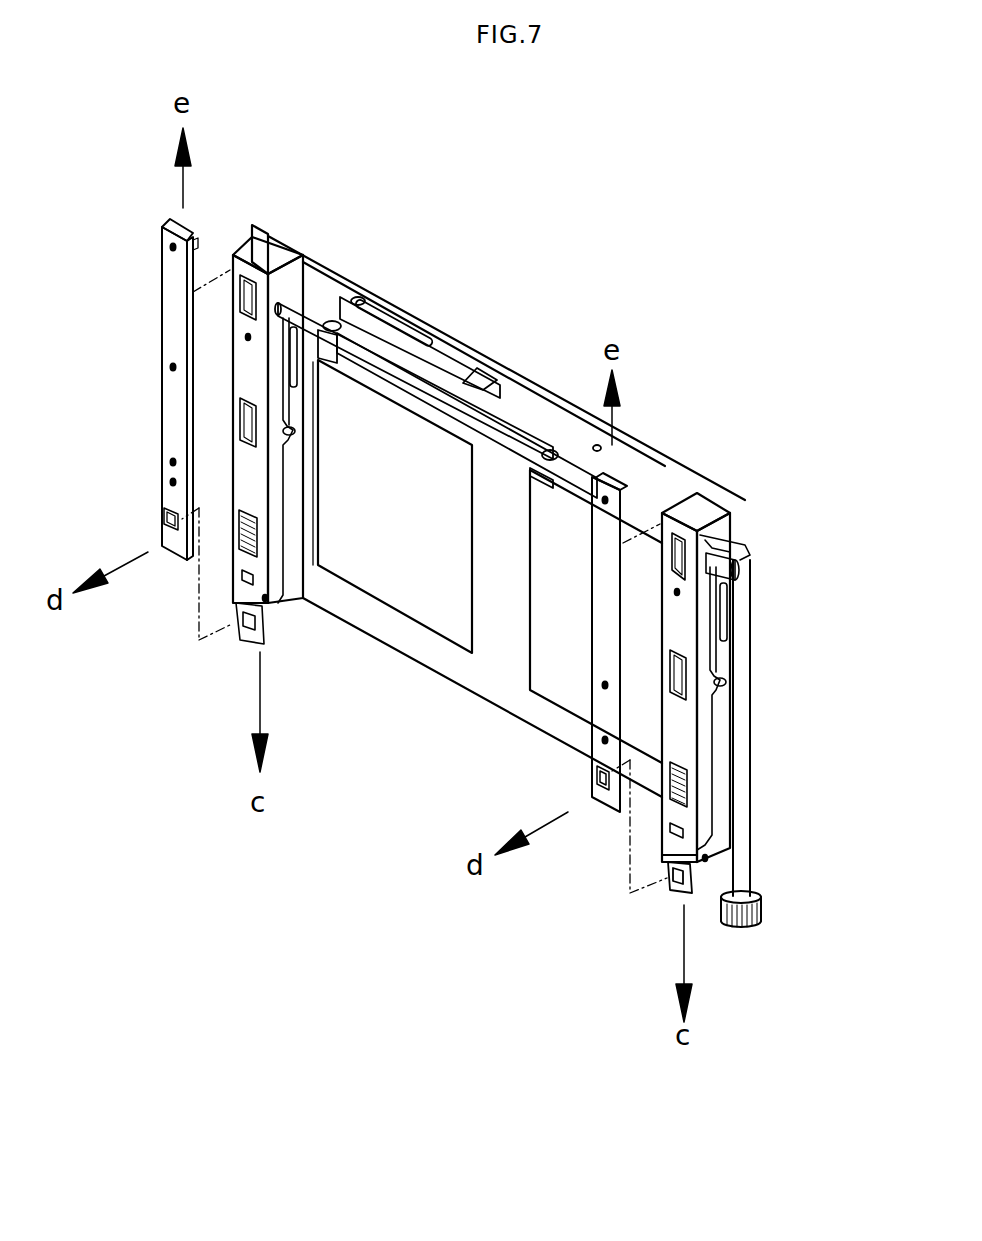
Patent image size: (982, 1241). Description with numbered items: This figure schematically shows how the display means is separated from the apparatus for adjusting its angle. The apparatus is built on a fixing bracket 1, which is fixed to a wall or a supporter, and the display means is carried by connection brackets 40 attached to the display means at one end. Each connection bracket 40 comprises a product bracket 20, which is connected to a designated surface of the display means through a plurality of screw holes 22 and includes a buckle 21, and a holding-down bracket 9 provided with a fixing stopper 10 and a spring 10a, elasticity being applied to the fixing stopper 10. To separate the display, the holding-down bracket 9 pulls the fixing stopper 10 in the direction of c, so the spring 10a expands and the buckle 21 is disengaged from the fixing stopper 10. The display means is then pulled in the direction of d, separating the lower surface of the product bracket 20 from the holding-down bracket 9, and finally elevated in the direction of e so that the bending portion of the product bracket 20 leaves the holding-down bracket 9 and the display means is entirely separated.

The fixing bracket 1 is at (489, 511).
The holding-down bracket 9 is at (677, 733).
The fixing stopper 10 is at (701, 827).
The spring 10a is at (680, 790).
The product bracket 20 is at (644, 642).
The buckle 21 is at (594, 772).
The screw holes 22 is at (607, 720).
The connection bracket 40 is at (672, 667).